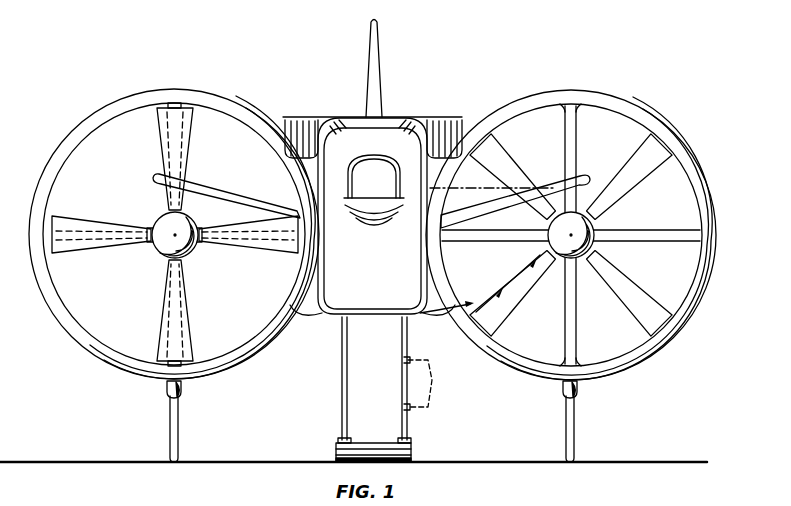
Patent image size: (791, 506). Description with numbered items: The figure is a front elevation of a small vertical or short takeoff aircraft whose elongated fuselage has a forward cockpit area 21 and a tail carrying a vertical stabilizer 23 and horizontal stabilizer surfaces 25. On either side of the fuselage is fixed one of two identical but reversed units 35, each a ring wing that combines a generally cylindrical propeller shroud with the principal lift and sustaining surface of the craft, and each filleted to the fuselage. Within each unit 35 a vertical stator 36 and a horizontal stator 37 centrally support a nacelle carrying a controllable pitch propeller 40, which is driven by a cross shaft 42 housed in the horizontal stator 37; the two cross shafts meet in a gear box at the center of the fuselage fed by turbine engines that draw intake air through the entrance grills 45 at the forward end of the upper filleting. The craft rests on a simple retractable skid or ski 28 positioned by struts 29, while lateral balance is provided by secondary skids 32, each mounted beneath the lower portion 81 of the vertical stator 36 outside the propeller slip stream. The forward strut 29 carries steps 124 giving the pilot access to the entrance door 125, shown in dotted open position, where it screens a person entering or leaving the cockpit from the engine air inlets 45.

The forward cockpit area 21 is at (383, 273).
The vertical stabilizer 23 is at (378, 73).
The horizontal stabilizer surfaces 25 is at (267, 215).
The retractable skid or ski 28 is at (370, 448).
The struts 29 is at (386, 390).
The secondary skids 32 is at (180, 447).
The units 35 is at (173, 90).
The vertical stator 36 is at (577, 148).
The horizontal stator 37 is at (641, 236).
The controllable pitch propeller 40 is at (195, 251).
The cross shaft 42 is at (258, 246).
The entrance grills 45 is at (295, 122).
The lower portion of vertical stator 81 is at (164, 392).
The steps 124 is at (437, 383).
The entrance door 125 is at (553, 203).